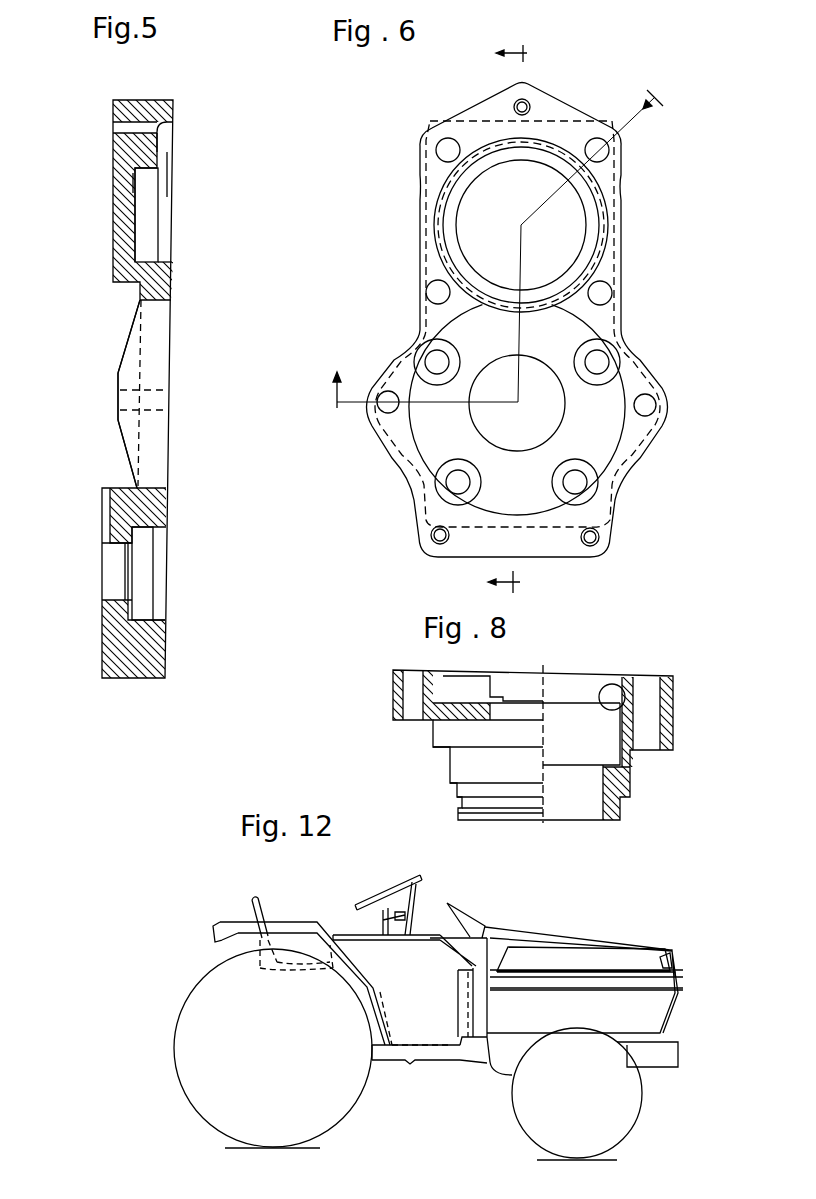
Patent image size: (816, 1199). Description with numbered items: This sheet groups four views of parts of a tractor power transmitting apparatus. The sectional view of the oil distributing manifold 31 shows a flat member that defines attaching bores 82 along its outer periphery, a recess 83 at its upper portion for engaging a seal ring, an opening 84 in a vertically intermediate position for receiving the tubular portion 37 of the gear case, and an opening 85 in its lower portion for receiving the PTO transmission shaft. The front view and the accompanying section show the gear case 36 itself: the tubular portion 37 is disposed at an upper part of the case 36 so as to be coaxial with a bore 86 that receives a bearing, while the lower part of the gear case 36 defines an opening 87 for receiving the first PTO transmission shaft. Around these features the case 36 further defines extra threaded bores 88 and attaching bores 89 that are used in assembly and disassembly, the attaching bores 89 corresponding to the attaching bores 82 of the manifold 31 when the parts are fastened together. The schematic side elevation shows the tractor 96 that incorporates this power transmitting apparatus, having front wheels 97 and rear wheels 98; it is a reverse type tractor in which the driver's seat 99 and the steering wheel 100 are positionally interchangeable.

In FIG. 5, the oil distributing manifold 31 is at (161, 686).
In FIG. 5, the attaching bores 82 is at (133, 400).
In FIG. 5, the recess 83 is at (152, 217).
In FIG. 5, the opening 84 is at (157, 423).
In FIG. 5, the opening 85 is at (108, 601).
In FIG. 6, the gear case 36 is at (627, 287).
In FIG. 8, the tubular portion 37 is at (632, 783).
In FIG. 6, the bore 86 is at (590, 207).
In FIG. 8, the bore 86 is at (607, 682).
In FIG. 6, the opening 87 is at (560, 412).
In FIG. 6, the extra threaded bores 88 is at (519, 105).
In FIG. 6, the attaching bores 89 is at (440, 287).
In FIG. 8, the attaching bores 89 is at (652, 727).
In FIG. 12, the tractor 96 is at (563, 926).
In FIG. 12, the front wheels 97 is at (523, 1098).
In FIG. 12, the rear wheels 98 is at (347, 1092).
In FIG. 12, the driver's seat 99 is at (263, 912).
In FIG. 12, the steering wheel 100 is at (424, 876).